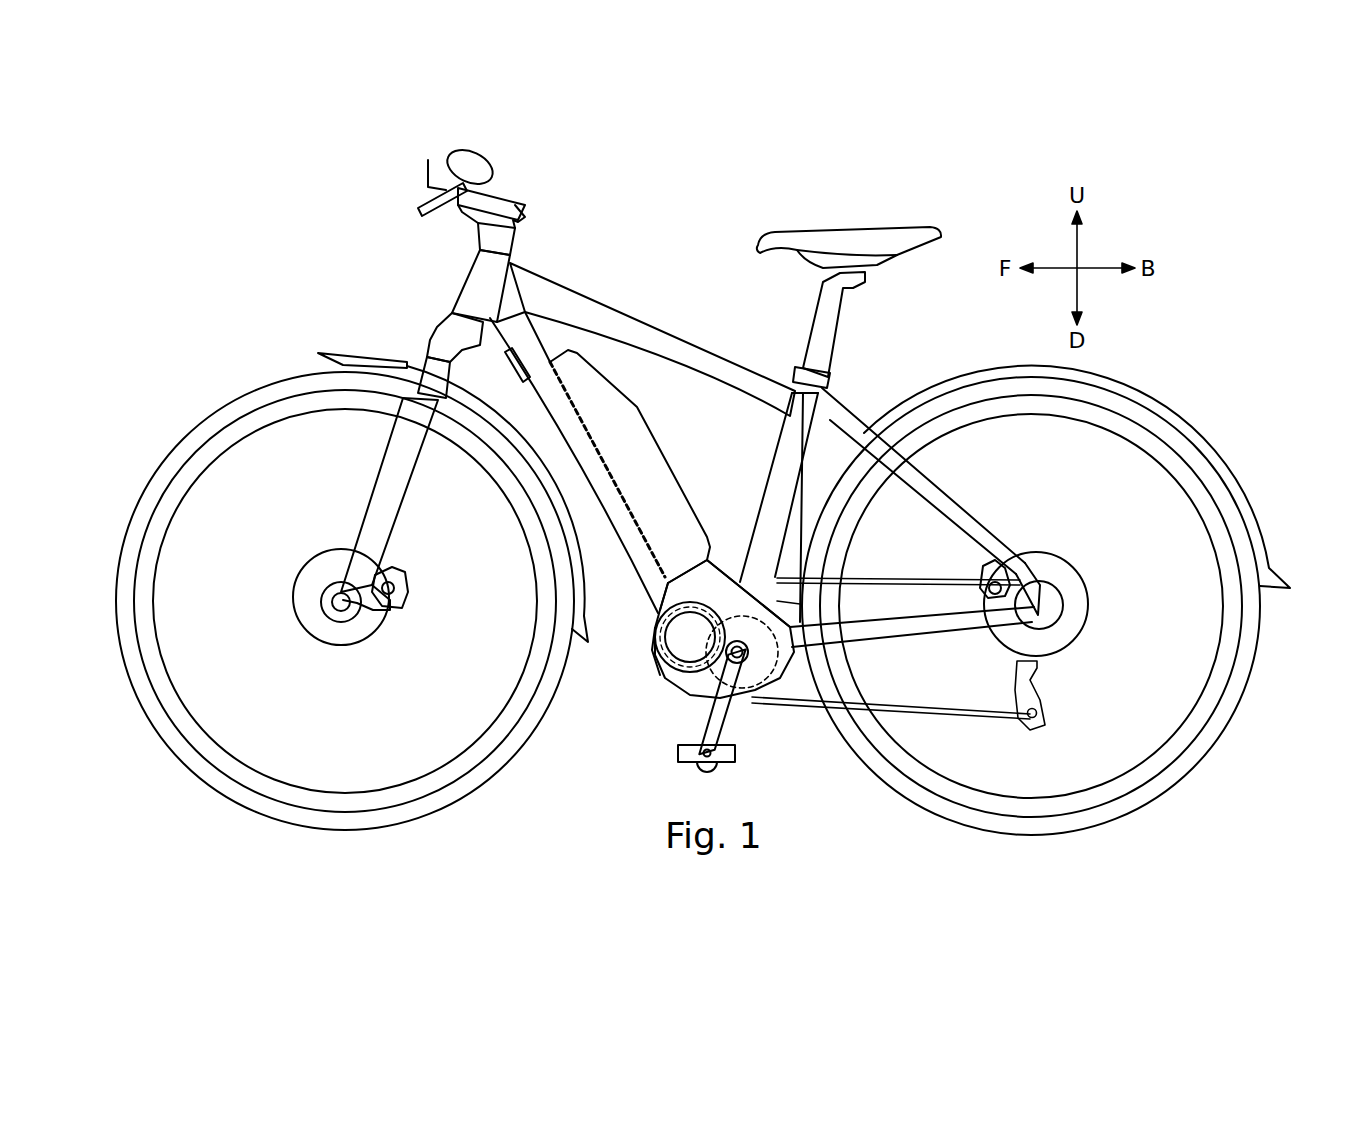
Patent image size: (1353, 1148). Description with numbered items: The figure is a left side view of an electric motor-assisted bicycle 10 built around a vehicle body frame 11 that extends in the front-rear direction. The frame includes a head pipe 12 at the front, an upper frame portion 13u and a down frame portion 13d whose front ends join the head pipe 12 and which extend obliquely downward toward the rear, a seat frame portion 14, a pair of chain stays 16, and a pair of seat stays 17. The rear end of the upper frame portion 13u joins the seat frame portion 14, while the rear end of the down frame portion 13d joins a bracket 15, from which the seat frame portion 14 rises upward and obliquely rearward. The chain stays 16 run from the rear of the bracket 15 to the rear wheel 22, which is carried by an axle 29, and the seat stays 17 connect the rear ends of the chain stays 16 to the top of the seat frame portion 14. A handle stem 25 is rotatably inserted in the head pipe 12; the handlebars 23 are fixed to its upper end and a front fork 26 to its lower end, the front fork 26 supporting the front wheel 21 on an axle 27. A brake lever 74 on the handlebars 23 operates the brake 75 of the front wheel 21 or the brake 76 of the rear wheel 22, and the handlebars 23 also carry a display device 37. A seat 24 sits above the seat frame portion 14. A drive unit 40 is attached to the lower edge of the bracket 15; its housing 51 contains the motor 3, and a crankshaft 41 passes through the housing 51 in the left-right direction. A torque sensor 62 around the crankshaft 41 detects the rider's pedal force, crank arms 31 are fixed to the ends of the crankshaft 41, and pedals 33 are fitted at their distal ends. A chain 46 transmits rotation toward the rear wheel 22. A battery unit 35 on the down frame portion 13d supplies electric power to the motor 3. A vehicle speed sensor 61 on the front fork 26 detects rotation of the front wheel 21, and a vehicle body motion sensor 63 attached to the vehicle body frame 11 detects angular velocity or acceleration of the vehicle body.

The motor 3 is at (645, 642).
The electric motor-assisted bicycle 10 is at (713, 192).
The vehicle body frame 11 is at (675, 326).
The head pipe 12 is at (473, 283).
The upper frame portion 13u is at (572, 313).
The down frame portion 13d is at (565, 412).
The seat frame portion 14 is at (783, 490).
The bracket 15 is at (723, 590).
The chain stays 16 is at (878, 632).
The seat stays 17 is at (938, 506).
The front wheel 21 is at (262, 372).
The rear wheel 22 is at (1148, 420).
The handlebars 23 is at (497, 163).
The seat 24 is at (852, 241).
The handle stem 25 is at (500, 243).
The front fork 26 is at (390, 506).
The axle 27 is at (338, 604).
The axle 29 is at (1048, 632).
The crank arms 31 is at (745, 721).
The pedals 33 is at (725, 759).
The battery unit 35 is at (678, 520).
The display device 37 is at (505, 196).
The drive unit 40 is at (655, 683).
The crankshaft 41 is at (745, 662).
The chain 46 is at (930, 717).
The housing 51 is at (658, 621).
The vehicle speed sensor 61 is at (343, 560).
The torque sensor 62 is at (722, 656).
The vehicle body motion sensor 63 is at (504, 388).
The brake lever 74 is at (410, 201).
The brake 75 is at (402, 586).
The brake 76 is at (984, 573).